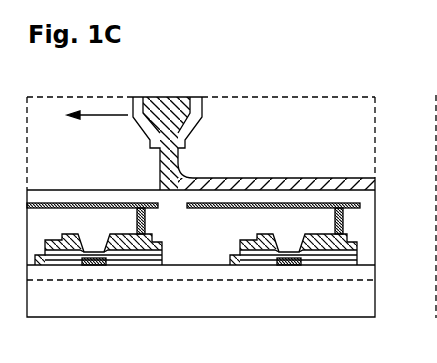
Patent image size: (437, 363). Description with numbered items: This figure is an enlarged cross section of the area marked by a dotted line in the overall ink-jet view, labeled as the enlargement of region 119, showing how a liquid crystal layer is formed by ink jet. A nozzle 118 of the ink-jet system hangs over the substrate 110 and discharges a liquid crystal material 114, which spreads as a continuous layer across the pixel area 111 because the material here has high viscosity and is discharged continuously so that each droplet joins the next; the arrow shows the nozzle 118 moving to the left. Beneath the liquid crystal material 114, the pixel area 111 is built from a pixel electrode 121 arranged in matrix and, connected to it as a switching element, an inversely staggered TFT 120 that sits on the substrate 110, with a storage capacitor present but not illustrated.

The substrate 110 is at (67, 314).
The pixel area 111 is at (232, 257).
The liquid crystal material 114 is at (296, 178).
The nozzle 118 is at (199, 131).
The enlarged region 119 is at (231, 195).
The inversely staggered TFT 120 is at (309, 266).
The pixel electrode 121 is at (204, 210).